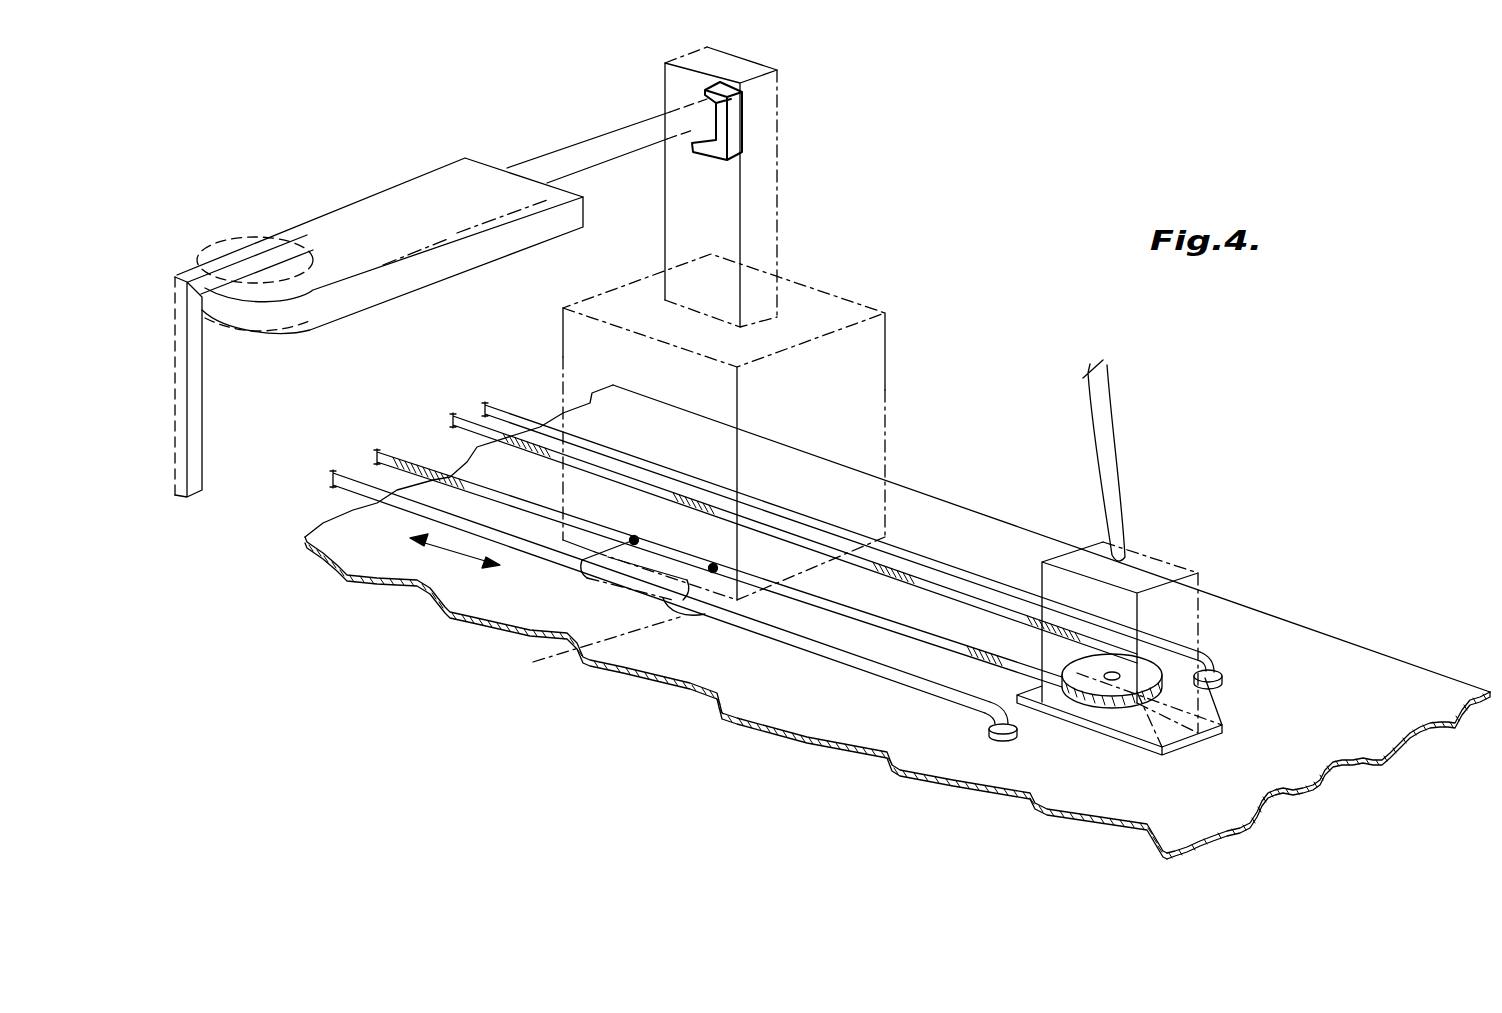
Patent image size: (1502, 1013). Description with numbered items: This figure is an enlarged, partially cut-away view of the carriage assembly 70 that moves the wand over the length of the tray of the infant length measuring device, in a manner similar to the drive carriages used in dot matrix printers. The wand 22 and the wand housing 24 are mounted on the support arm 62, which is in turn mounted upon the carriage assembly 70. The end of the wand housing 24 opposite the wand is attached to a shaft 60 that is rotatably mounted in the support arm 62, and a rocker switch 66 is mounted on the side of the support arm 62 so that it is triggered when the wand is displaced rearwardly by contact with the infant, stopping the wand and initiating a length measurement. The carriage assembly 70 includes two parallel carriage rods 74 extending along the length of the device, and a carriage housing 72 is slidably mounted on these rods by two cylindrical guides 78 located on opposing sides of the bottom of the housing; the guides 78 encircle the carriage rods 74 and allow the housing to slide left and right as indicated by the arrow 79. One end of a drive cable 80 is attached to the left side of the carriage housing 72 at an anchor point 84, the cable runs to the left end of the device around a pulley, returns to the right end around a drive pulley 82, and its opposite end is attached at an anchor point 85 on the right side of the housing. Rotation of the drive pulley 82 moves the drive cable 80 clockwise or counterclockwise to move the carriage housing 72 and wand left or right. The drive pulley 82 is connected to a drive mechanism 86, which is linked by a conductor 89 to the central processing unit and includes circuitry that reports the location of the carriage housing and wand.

The wand 22 is at (198, 437).
The wand housing 24 is at (385, 198).
The shaft 60 is at (570, 155).
The support arm 62 is at (770, 205).
The rocker switch 66 is at (738, 120).
The carriage assembly 70 is at (950, 260).
The carriage housing 72 is at (880, 385).
The carriage rods 74 is at (905, 548).
The cylindrical guides 78 is at (592, 578).
The arrow 79 is at (367, 578).
The drive cable 80 is at (933, 592).
The drive pulley 82 is at (1092, 690).
The anchor point 84 is at (582, 560).
The anchor point 85 is at (713, 568).
The drive mechanism 86 is at (1140, 558).
The conductor 89 is at (1115, 437).